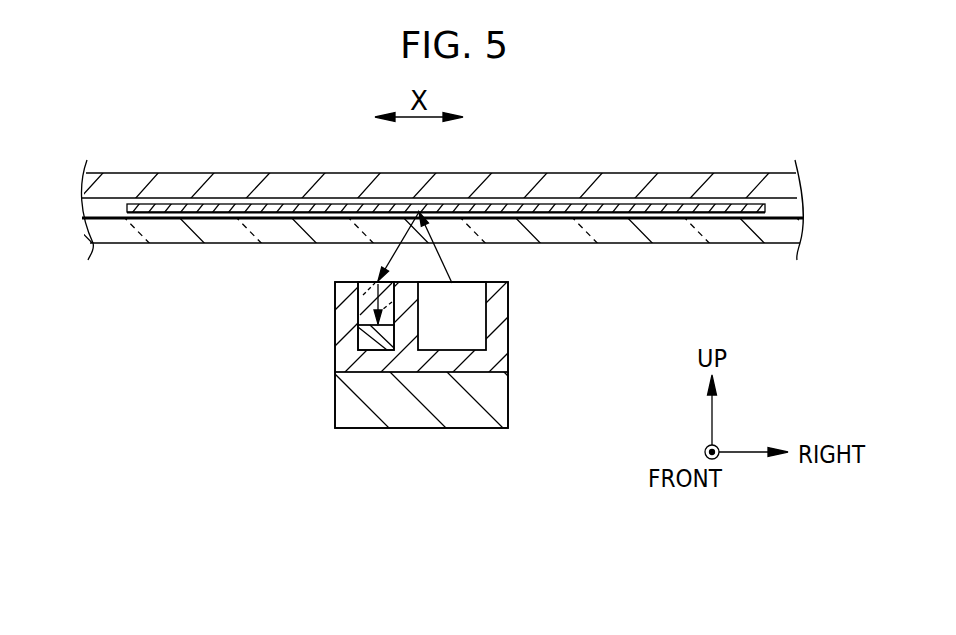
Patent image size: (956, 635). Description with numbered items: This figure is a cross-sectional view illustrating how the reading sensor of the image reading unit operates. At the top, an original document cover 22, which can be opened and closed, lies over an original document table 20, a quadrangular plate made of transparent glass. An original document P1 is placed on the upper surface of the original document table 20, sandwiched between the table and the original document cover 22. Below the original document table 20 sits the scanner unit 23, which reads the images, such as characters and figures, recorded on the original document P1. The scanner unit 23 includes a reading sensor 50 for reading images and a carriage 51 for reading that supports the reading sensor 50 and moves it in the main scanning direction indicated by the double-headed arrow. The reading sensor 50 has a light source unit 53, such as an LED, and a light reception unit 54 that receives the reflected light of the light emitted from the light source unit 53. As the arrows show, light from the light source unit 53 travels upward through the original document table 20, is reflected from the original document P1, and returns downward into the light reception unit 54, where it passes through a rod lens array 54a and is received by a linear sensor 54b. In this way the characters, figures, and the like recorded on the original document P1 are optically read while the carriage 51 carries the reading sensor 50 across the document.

The original document cover 22 is at (612, 182).
The original document table 20 is at (658, 235).
The original document P1 is at (675, 207).
The scanner unit 23 is at (340, 451).
The reading sensor 50 is at (503, 337).
The carriage for reading 51 is at (503, 392).
The light source unit 53 is at (467, 288).
The light reception unit 54 is at (270, 287).
The rod lens array 54a is at (368, 297).
The linear sensor 54b is at (372, 337).